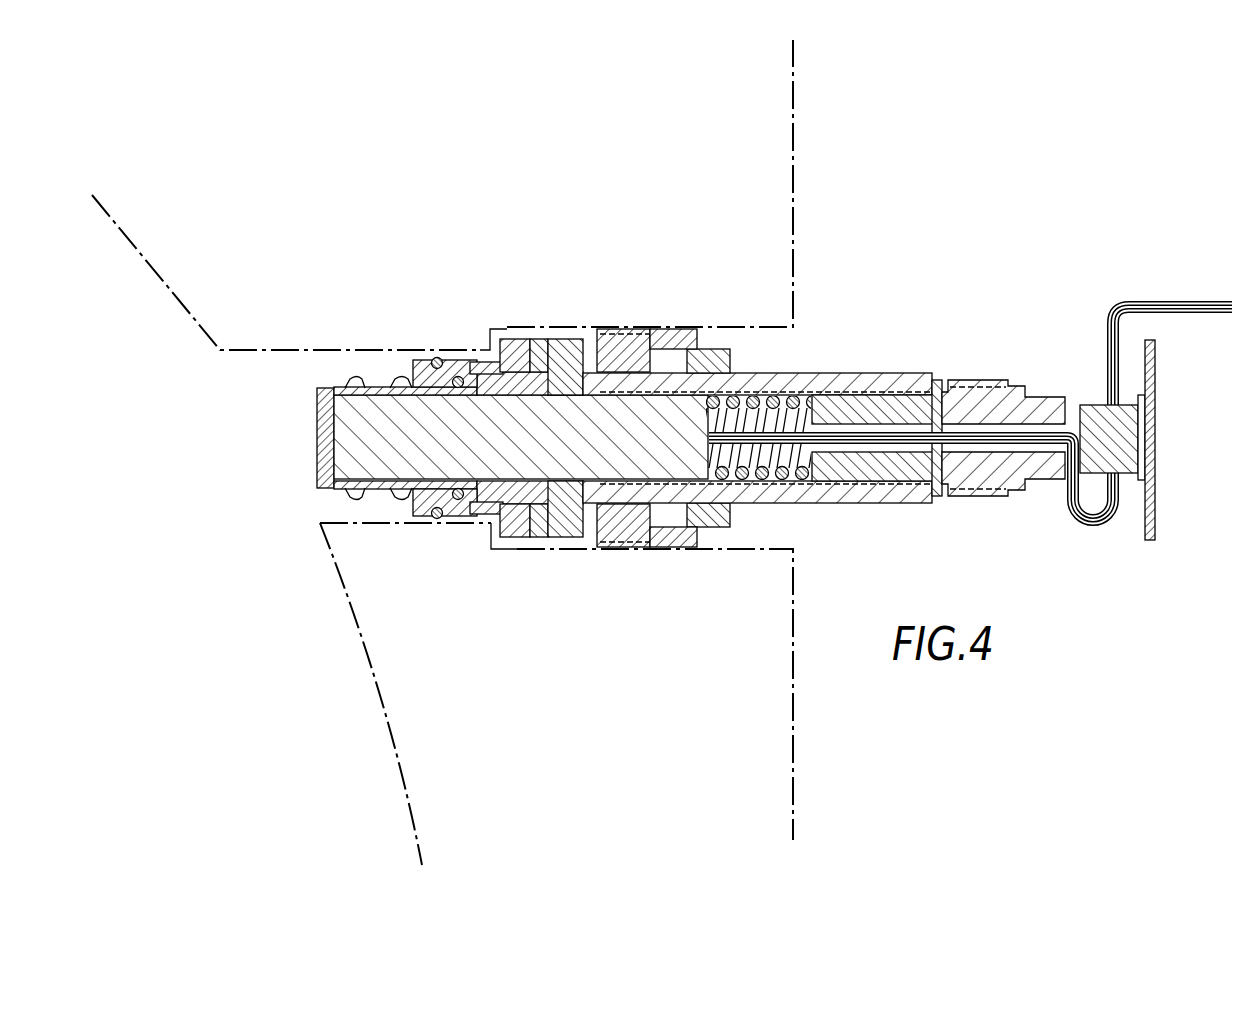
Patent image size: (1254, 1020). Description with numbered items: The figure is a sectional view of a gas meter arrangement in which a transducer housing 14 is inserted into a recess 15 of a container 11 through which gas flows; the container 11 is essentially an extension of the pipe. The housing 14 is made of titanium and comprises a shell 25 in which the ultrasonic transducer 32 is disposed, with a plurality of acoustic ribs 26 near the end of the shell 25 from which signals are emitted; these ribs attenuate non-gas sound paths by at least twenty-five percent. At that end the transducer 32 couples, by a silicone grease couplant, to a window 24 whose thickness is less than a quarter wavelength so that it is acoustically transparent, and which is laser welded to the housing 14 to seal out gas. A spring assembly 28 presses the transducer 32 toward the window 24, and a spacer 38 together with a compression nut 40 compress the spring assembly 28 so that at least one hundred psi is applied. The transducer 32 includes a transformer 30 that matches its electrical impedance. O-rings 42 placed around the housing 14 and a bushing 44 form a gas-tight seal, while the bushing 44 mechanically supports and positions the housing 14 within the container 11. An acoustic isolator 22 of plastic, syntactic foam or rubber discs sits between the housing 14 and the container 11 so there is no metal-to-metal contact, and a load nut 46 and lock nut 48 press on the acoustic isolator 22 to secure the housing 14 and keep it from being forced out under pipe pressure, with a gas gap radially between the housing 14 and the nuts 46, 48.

The container 11 is at (563, 220).
The housing 14 is at (760, 372).
The recess 15 is at (258, 368).
The acoustic isolator 22 is at (588, 335).
The window 24 is at (317, 415).
The shell 25 is at (813, 503).
The acoustic ribs 26 is at (355, 497).
The spring assembly 28 is at (792, 395).
The transformer 30 is at (1097, 405).
The ultrasonic transducer 32 is at (385, 396).
The spacer 38 is at (892, 373).
The compression nut 40 is at (1018, 385).
The O-rings 42 is at (467, 512).
The bushing 44 is at (534, 539).
The load nut 46 is at (617, 548).
The lock nut 48 is at (680, 548).